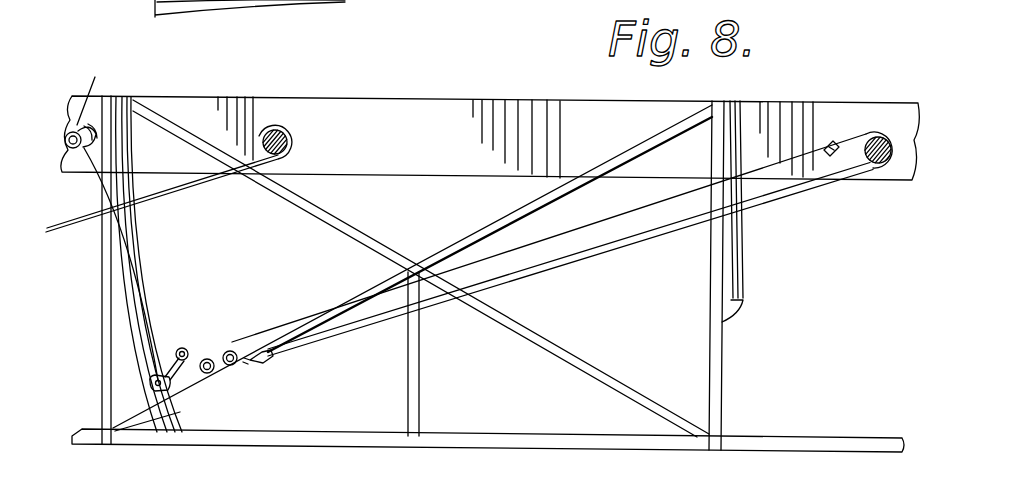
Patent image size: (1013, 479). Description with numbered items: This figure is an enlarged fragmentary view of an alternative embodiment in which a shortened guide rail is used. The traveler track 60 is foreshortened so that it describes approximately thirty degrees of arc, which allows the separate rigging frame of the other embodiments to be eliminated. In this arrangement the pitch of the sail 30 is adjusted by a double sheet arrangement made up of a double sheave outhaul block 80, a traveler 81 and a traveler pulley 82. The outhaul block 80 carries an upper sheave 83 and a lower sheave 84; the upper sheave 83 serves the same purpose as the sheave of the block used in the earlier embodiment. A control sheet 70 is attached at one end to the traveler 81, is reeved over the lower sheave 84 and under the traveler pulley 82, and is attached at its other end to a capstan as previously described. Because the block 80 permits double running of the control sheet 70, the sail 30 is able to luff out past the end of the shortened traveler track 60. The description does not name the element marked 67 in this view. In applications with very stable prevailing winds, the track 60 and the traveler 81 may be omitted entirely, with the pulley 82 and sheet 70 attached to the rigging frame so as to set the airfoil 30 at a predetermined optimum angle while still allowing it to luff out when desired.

The sail 30 is at (586, 262).
The traveler track 60 is at (142, 335).
The cable 67 is at (624, 217).
The control sheet 70 is at (146, 293).
The double sheave outhaul block 80 is at (220, 364).
The traveler 81 is at (170, 393).
The traveler pulley 82 is at (180, 347).
The upper sheave 83 is at (234, 351).
The lower sheave 84 is at (207, 358).